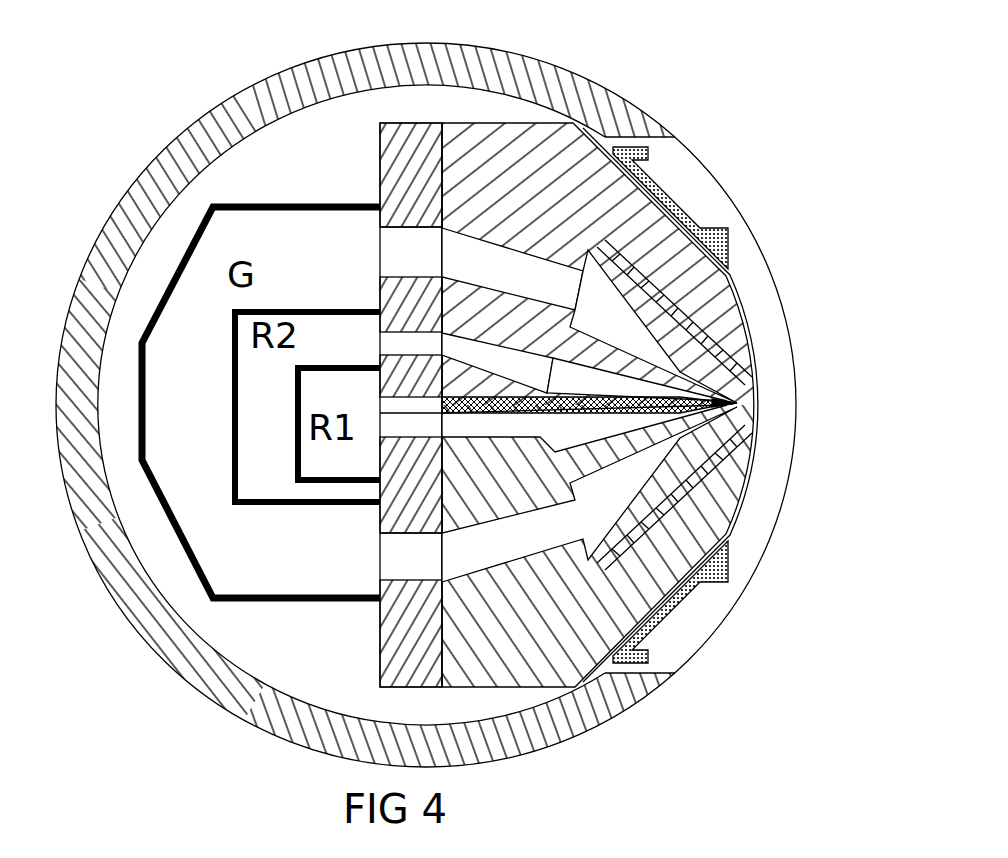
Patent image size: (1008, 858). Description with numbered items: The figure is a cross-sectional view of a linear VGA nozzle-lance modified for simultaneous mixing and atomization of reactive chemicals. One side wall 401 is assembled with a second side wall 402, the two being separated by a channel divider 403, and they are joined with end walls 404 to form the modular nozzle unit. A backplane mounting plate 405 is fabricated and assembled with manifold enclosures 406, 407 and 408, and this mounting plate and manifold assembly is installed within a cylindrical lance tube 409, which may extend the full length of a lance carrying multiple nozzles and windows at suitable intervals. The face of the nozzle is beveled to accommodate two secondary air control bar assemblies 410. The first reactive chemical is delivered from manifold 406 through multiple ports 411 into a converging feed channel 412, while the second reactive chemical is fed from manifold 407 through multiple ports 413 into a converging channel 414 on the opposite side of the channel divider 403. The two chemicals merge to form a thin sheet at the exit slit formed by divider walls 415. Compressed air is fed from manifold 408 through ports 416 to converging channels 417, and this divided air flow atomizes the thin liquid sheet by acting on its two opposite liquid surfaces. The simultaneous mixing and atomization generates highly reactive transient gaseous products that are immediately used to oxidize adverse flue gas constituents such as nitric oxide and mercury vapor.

The side wall 401 is at (577, 138).
The second side wall 402 is at (713, 522).
The channel divider 403 is at (715, 445).
The end walls 404 is at (373, 57).
The backplane mounting plate 405 is at (382, 137).
The manifold enclosure 406 is at (294, 393).
The manifold enclosure 407 is at (343, 505).
The manifold enclosure 408 is at (267, 602).
The cylindrical lance tube 409 is at (253, 722).
The secondary air control bar assemblies 410 is at (705, 218).
The ports 411 is at (589, 421).
The converging feed channel 412 is at (584, 428).
The ports 413 is at (497, 363).
The converging channel 414 is at (637, 379).
The divider walls 415 is at (677, 373).
The ports 416 is at (512, 269).
The converging channels 417 is at (653, 326).